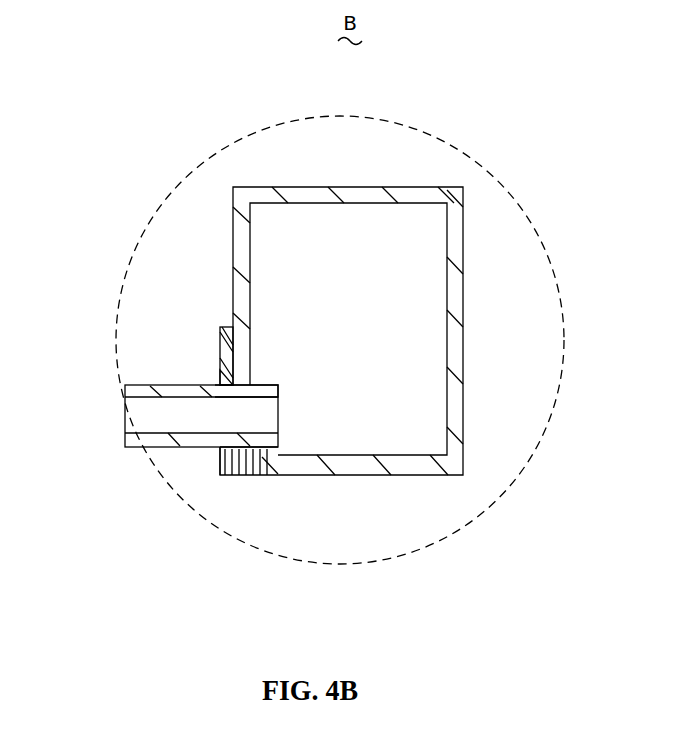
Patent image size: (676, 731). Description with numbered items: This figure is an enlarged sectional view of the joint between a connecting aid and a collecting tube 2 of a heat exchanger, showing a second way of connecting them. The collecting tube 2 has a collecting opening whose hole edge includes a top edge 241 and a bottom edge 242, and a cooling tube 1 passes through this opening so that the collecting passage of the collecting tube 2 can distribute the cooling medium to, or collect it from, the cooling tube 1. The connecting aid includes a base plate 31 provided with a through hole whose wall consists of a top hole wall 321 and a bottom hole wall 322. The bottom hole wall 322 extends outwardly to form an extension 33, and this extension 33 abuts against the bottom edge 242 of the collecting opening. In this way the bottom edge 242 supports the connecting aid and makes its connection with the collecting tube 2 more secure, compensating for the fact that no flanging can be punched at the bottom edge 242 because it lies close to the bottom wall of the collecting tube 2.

The cooling tube 1 is at (160, 391).
The collecting tube 2 is at (372, 197).
The base plate 31 is at (221, 381).
The top hole wall 321 is at (224, 384).
The bottom hole wall 322 is at (222, 457).
The extension 33 is at (254, 463).
The top edge 241 is at (233, 392).
The bottom edge 242 is at (247, 458).